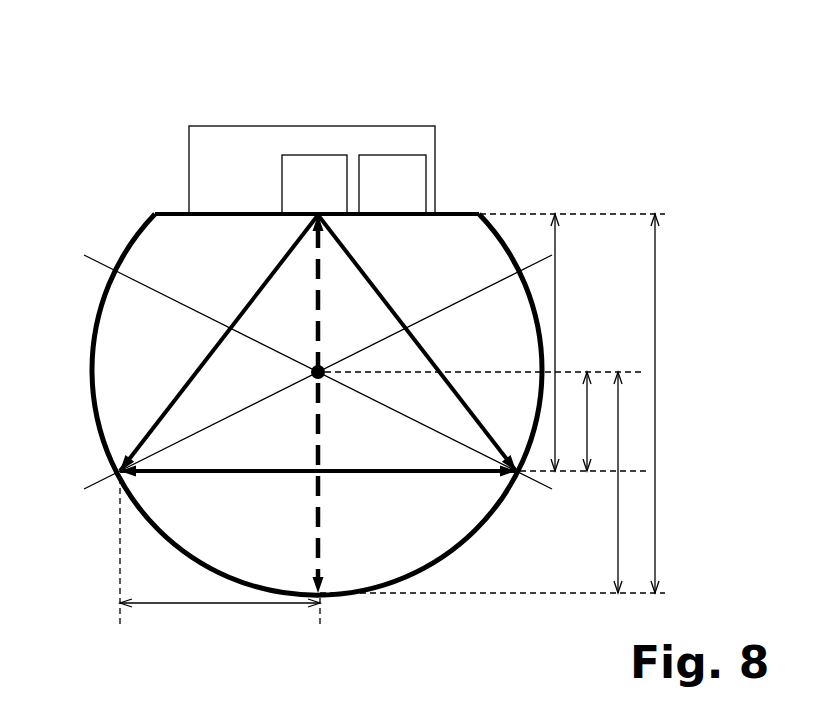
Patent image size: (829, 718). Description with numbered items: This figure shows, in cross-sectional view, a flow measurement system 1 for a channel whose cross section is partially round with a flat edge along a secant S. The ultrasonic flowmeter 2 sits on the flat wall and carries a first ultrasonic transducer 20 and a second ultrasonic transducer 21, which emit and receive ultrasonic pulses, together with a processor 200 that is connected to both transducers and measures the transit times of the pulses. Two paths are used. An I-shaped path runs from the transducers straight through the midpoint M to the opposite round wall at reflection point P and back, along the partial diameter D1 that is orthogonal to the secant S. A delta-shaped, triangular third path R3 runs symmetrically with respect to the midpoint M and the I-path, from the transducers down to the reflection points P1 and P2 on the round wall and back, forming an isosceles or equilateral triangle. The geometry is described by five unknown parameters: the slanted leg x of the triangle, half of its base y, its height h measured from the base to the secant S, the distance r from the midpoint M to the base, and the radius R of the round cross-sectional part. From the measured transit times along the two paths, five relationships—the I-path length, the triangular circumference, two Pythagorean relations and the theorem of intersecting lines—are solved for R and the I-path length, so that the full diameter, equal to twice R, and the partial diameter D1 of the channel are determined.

The flow measurement system 1 is at (192, 68).
The ultrasonic flowmeter 2 is at (237, 127).
The first ultrasonic transducer 20 is at (269, 184).
The second ultrasonic transducer 21 is at (282, 187).
The processor 200 is at (427, 190).
The secant S is at (170, 212).
The midpoint M is at (311, 372).
The reflection point P is at (323, 598).
The first reflection point P1 is at (118, 476).
The second reflection point P2 is at (517, 476).
The path of ultrasonic signal R is at (231, 416).
The third path R3 is at (248, 304).
The side length of delta path x is at (205, 358).
The half base length of delta path y is at (220, 614).
The height of delta path h is at (562, 342).
The distance from midpoint to delta base r is at (593, 421).
The partial diameter D1 is at (670, 403).